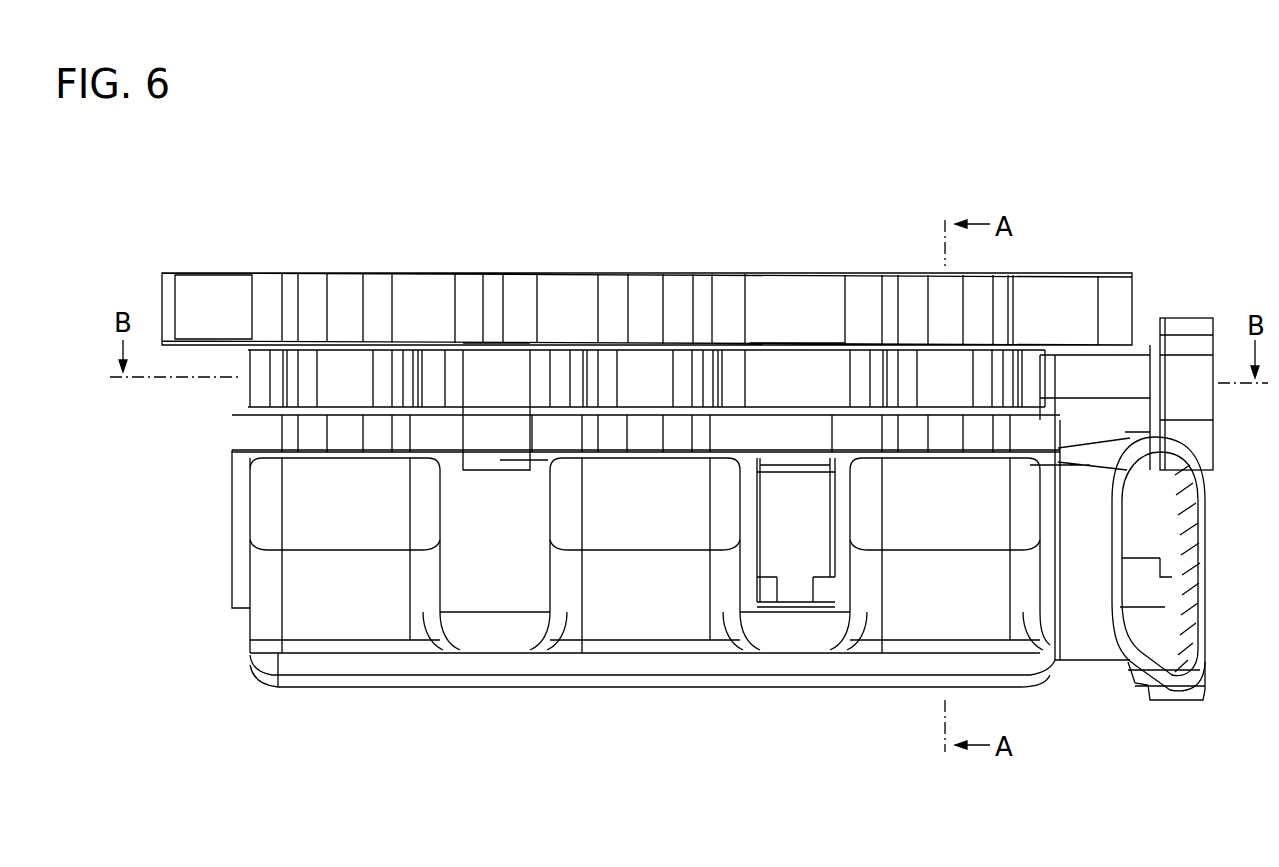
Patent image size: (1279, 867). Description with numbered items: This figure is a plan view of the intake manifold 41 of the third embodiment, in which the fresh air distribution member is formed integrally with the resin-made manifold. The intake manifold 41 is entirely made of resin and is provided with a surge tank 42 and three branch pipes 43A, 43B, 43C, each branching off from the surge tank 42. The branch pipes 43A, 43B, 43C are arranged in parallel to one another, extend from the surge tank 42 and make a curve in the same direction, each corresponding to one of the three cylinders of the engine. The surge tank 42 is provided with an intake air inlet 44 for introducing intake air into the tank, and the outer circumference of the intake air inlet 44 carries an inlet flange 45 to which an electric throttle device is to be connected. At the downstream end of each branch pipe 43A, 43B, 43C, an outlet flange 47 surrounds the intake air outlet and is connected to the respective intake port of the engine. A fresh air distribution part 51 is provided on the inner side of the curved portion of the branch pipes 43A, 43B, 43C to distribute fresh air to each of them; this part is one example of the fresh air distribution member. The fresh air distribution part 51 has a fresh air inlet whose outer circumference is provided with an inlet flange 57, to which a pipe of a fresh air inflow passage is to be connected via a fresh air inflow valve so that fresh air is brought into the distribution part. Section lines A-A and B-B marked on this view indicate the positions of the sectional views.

The intake manifold 41 is at (1077, 199).
The surge tank 42 is at (782, 665).
The branch pipe 43A is at (912, 625).
The branch pipe 43B is at (608, 598).
The branch pipe 43C is at (308, 612).
The intake air inlet 44 is at (1188, 528).
The inlet flange 45 is at (1168, 700).
The outlet flange 47 is at (1108, 272).
The fresh air distribution part 51 is at (1135, 370).
The inlet flange 57 is at (1198, 440).